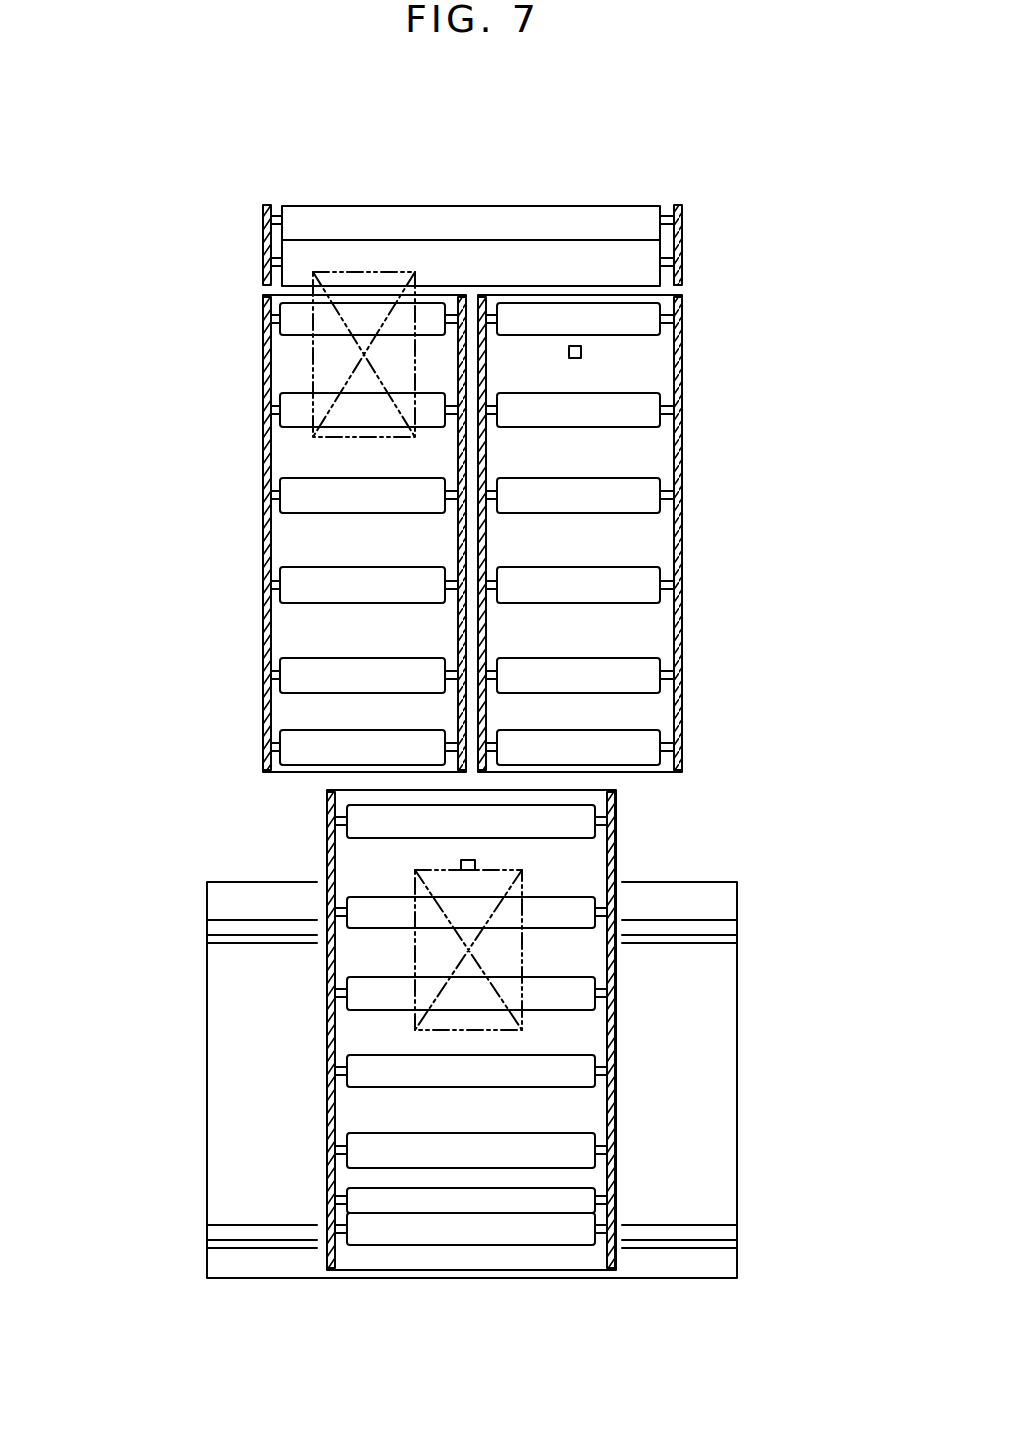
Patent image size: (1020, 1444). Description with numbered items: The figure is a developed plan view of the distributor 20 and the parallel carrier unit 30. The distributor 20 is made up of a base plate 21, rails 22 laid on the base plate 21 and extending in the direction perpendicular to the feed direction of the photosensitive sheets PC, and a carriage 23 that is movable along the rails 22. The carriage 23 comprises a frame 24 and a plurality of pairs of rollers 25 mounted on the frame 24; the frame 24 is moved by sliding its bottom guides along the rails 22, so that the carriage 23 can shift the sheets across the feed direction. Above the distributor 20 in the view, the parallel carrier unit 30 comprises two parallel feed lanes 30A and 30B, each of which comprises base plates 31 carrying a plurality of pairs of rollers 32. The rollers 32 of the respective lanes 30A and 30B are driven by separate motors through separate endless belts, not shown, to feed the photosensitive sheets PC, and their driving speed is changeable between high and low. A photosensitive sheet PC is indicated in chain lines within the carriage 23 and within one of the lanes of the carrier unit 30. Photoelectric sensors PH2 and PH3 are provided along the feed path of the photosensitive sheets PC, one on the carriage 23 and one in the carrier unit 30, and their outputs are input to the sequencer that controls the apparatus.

The distributor 20 is at (184, 958).
The base plate 21 is at (207, 1155).
The rails 22 is at (255, 945).
The carriage 23 is at (306, 1080).
The frame 24 is at (616, 1018).
The rollers 25 is at (580, 1222).
The parallel carrier unit 30 is at (231, 488).
The feed lane 30A is at (246, 710).
The feed lane 30B is at (695, 660).
The base plates 31 is at (262, 433).
The rollers 32 is at (300, 667).
The photosensitive sheets PC is at (365, 353).
The photoelectric sensor PH2 is at (476, 865).
The photoelectric sensor PH3 is at (366, 353).